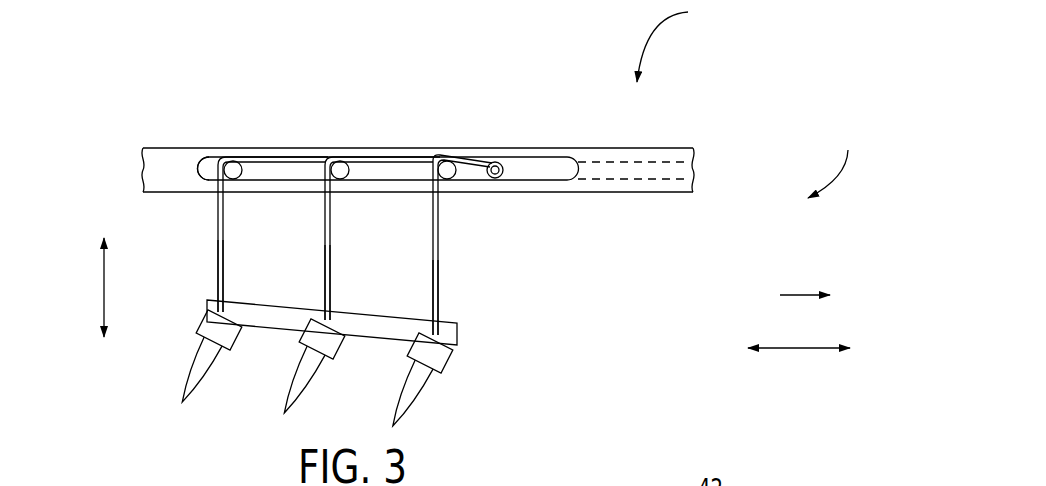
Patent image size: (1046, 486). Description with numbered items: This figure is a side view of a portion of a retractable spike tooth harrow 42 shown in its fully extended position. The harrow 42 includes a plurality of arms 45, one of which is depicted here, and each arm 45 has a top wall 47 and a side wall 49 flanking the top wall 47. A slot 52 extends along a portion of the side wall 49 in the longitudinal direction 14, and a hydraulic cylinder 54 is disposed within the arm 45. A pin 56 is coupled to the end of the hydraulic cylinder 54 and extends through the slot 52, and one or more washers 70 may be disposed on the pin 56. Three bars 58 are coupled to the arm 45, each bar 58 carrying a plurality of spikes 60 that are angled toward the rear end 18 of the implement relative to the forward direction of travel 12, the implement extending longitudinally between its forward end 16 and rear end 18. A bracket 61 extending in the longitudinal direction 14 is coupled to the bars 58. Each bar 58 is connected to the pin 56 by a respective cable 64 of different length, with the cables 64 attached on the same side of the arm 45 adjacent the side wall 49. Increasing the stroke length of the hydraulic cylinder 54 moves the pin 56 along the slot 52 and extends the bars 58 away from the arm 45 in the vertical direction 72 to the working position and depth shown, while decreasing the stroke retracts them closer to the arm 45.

The forward direction of travel 12 is at (800, 294).
The longitudinal direction 14 is at (798, 350).
The forward end 16 is at (835, 160).
The rear end 18 is at (379, 160).
The retractable spike tooth harrow 42 is at (677, 41).
The arm 45 is at (199, 156).
The top wall 47 is at (173, 150).
The side wall 49 is at (183, 177).
The slot 52 is at (409, 129).
The hydraulic cylinder 54 is at (650, 165).
The pin 56 is at (533, 123).
The bar 58 is at (243, 167).
The spike 60 is at (423, 397).
The bracket 61 is at (450, 320).
The cable 64 is at (323, 243).
The washer 70 is at (498, 162).
The vertical direction 72 is at (102, 287).